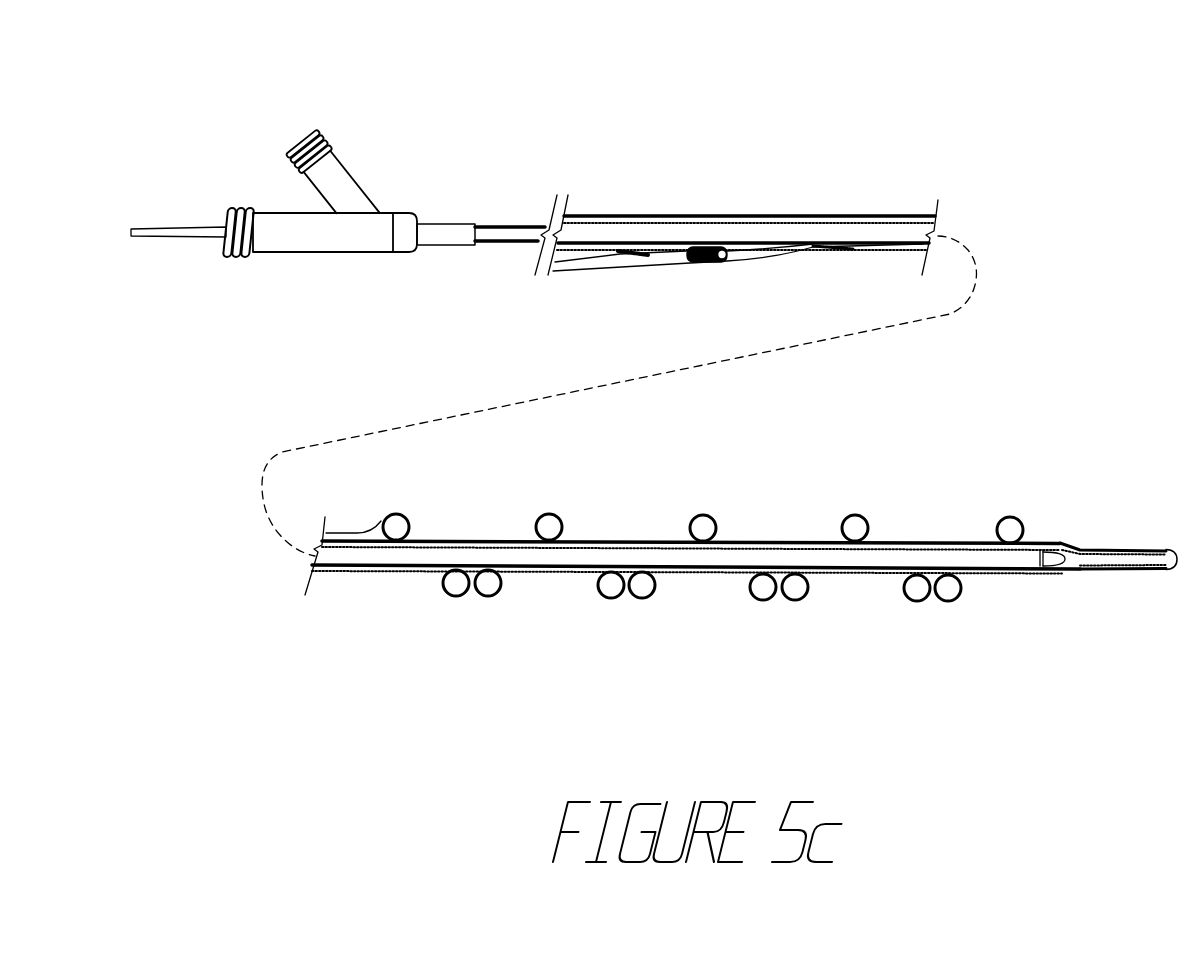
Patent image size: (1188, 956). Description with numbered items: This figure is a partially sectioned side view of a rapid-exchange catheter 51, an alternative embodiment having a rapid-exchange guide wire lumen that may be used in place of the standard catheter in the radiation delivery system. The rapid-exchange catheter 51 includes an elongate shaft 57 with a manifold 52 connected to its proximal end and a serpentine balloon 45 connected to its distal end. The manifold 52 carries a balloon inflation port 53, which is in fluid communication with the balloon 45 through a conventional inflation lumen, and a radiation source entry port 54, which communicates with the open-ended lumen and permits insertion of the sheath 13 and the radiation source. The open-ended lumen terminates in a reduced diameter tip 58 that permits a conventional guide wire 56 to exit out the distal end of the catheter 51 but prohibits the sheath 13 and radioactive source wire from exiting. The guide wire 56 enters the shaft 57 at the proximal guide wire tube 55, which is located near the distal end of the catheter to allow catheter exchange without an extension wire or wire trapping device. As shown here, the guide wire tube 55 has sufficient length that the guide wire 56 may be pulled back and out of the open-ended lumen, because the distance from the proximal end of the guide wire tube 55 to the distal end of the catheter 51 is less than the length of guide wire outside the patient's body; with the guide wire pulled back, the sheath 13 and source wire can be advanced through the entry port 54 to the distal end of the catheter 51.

The sheath 13 is at (168, 238).
The balloon 45 is at (615, 598).
The rapid-exchange catheter 51 is at (654, 365).
The manifold 52 is at (532, 312).
The balloon inflation port 53 is at (334, 164).
The radiation source entry port 54 is at (305, 253).
The proximal guide wire tube 55 is at (753, 262).
The guide wire 56 is at (738, 298).
The elongate shaft 57 is at (696, 353).
The reduced diameter tip 58 is at (1158, 550).